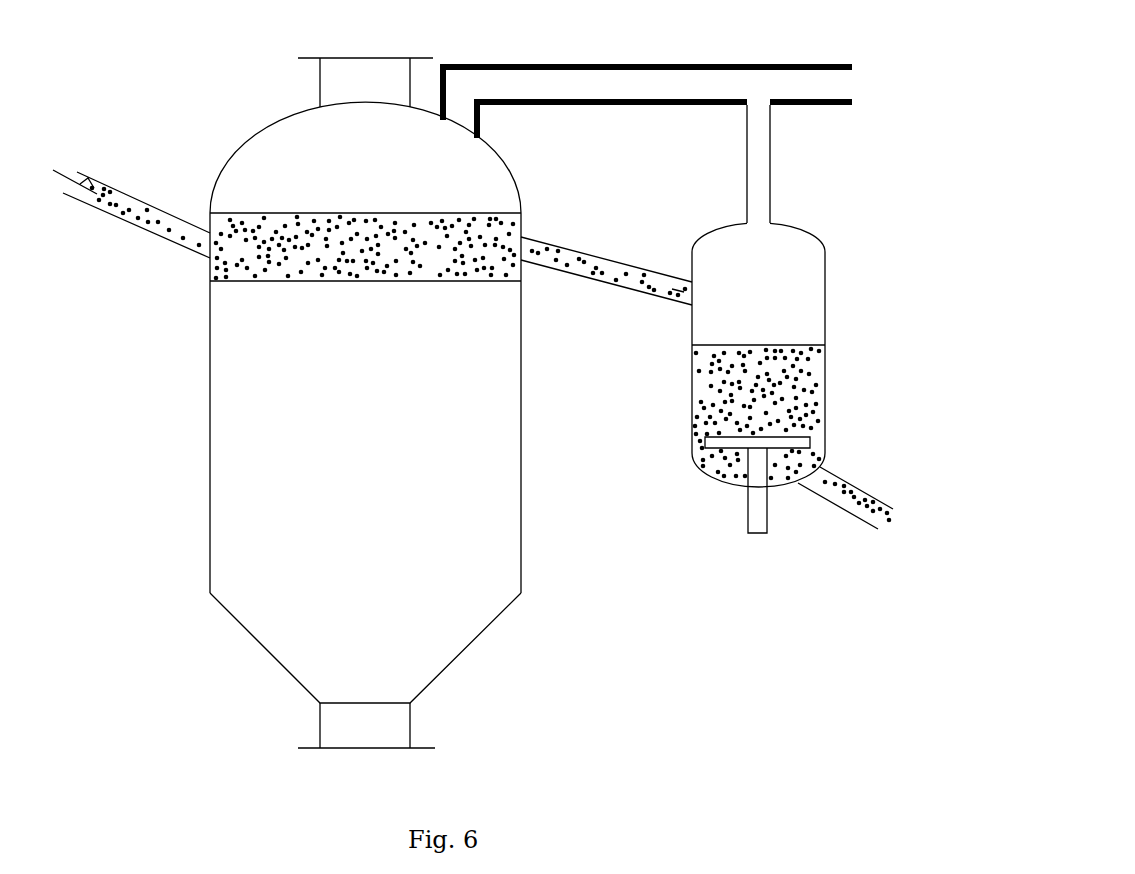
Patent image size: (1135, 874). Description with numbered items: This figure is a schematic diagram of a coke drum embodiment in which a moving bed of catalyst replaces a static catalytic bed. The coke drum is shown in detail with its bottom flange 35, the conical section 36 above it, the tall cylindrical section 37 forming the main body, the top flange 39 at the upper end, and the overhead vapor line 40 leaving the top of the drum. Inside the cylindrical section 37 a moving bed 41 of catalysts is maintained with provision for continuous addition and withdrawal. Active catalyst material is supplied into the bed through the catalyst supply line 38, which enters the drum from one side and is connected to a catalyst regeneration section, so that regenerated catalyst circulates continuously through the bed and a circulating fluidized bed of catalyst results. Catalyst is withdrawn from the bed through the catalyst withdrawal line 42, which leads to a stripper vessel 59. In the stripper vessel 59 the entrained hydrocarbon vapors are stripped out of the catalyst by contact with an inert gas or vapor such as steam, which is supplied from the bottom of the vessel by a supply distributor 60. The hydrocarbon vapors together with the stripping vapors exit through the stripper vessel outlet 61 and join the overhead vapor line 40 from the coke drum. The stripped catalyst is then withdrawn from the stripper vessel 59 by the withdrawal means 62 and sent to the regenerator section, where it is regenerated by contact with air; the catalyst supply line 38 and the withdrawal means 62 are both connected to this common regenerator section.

The bottom flange 35 is at (342, 752).
The conical section 36 is at (275, 665).
The cylindrical section 37 is at (208, 377).
The catalyst supply line 38 is at (87, 205).
The top flange 39 is at (375, 57).
The overhead vapor line 40 is at (567, 63).
The moving bed 41 is at (460, 212).
The catalyst withdrawal line 42 is at (657, 299).
The stripper vessel 59 is at (692, 350).
The supply distributor 60 is at (743, 530).
The stripper vessel outlet 61 is at (770, 178).
The withdrawal means 62 is at (895, 508).